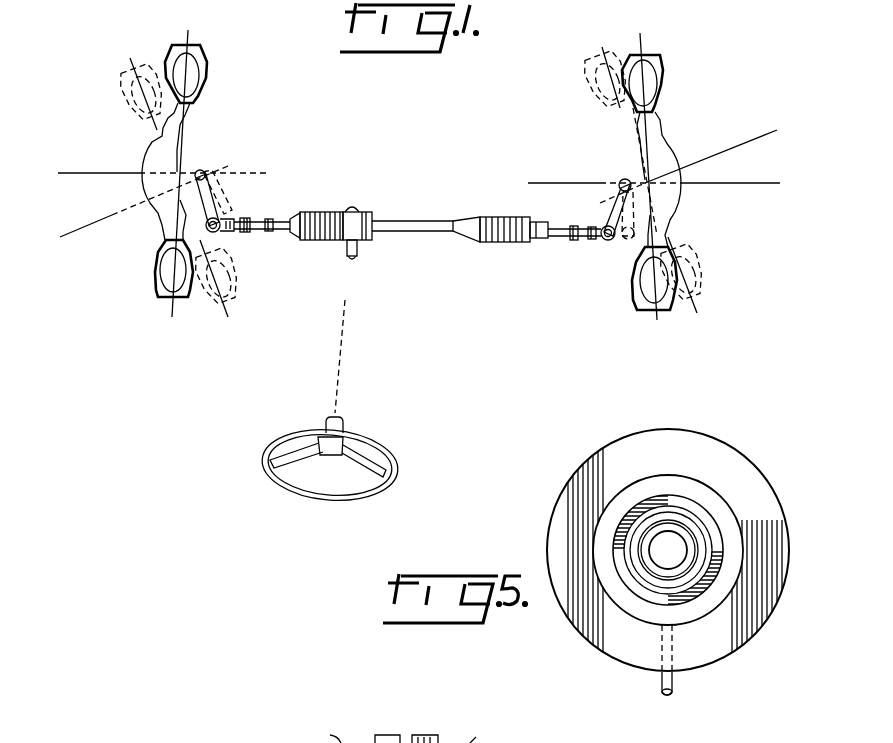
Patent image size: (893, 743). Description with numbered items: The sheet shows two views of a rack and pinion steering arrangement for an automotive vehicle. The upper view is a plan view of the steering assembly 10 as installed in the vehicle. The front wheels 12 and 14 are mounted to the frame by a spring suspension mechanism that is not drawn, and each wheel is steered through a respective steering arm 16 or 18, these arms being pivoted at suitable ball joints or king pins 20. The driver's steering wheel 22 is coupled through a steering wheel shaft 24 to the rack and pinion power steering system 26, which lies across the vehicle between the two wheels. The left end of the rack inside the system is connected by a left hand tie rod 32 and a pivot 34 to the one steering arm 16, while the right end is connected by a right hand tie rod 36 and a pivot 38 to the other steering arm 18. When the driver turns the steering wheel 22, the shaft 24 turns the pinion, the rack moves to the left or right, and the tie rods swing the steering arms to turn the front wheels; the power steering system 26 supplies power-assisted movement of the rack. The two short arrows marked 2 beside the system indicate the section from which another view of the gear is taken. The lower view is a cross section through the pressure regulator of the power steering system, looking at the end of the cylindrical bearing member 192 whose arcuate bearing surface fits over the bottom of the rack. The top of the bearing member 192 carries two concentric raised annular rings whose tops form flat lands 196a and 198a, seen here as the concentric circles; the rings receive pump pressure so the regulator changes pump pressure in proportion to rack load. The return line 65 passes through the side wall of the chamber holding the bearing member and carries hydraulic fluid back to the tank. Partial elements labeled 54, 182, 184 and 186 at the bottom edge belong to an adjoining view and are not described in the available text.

In FIG. 1, the steering assembly 10 is at (459, 142).
In FIG. 1, the front wheel 12 is at (203, 55).
In FIG. 1, the front wheel 14 is at (665, 72).
In FIG. 1, the steering arm 16 is at (214, 203).
In FIG. 1, the steering arm 18 is at (610, 211).
In FIG. 1, the ball joint or king pin 20 is at (203, 171).
In FIG. 1, the steering wheel 22 is at (312, 497).
In FIG. 1, the steering wheel shaft 24 is at (349, 253).
In FIG. 1, the rack and pinion power steering system 26 is at (369, 197).
In FIG. 1, the left hand tie rod 32 is at (287, 234).
In FIG. 1, the pivot 34 is at (178, 228).
In FIG. 1, the right hand tie rod 36 is at (560, 238).
In FIG. 1, the pivot 38 is at (608, 241).
In FIG. 1, the section line 2- 2 is at (395, 188).
In FIG. 5, the cylindrical bearing member 192 is at (636, 607).
In FIG. 5, the flat land 196a is at (667, 525).
In FIG. 5, the flat land 198a is at (696, 507).
In FIG. 5, the return line 65 is at (660, 688).
In FIG. 5, the housing member 54 is at (330, 738).
In FIG. 5, the fitting 182 is at (494, 732).
In FIG. 5, the fitting 184 is at (428, 733).
In FIG. 5, the fitting 186 is at (422, 733).